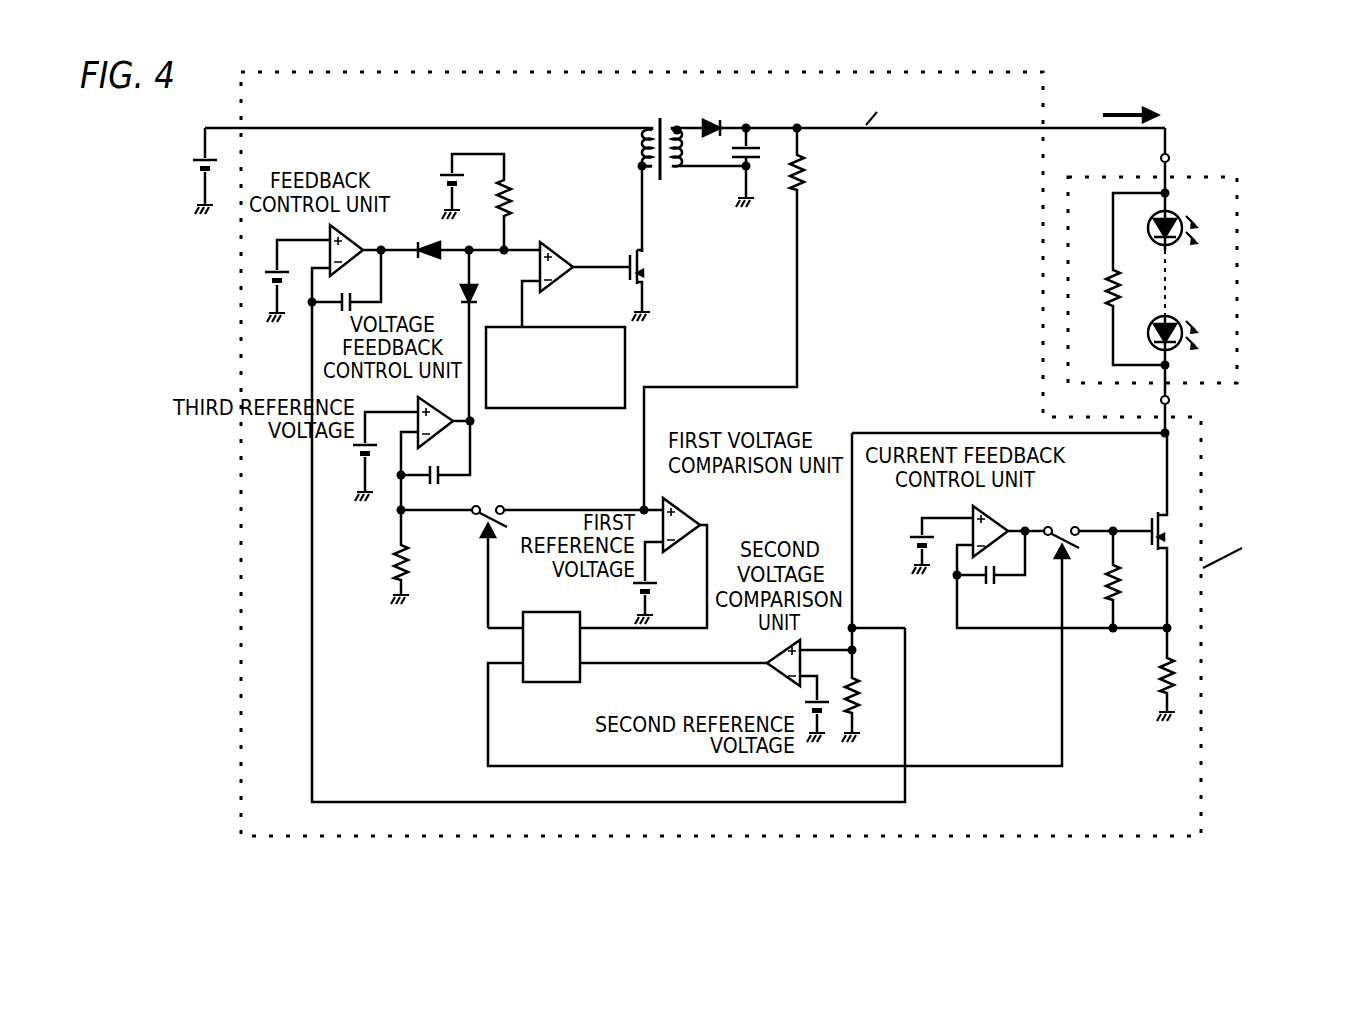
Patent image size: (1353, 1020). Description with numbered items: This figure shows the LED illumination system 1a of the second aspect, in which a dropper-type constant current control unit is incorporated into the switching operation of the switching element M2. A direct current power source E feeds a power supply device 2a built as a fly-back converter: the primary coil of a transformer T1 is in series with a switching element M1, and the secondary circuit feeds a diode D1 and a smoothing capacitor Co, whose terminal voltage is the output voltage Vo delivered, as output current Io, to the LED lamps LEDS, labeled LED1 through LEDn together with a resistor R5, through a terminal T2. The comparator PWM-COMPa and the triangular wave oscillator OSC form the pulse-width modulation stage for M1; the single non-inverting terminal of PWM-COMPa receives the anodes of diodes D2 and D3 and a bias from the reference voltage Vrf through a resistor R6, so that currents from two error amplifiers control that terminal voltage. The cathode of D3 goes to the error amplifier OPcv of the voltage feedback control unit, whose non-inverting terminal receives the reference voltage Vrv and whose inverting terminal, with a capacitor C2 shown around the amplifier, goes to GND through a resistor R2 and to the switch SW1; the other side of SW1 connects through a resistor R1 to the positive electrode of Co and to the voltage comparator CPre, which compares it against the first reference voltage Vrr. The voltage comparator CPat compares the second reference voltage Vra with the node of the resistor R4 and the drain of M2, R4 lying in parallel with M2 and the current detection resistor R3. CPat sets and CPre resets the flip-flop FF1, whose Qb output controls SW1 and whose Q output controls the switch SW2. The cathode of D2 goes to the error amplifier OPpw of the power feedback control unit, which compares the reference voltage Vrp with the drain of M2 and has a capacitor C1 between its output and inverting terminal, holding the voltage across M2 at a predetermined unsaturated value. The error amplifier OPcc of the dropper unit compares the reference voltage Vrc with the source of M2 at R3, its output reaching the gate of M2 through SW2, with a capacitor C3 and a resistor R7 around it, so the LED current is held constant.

The LED illumination system 1a is at (760, 61).
The power supply device 2a is at (1260, 585).
The direct current power source E is at (194, 186).
The transformer T1 is at (921, 171).
The diode D1 is at (717, 113).
The smoothing capacitor Co is at (761, 167).
The resistor R1 is at (742, 319).
The output voltage Vo is at (882, 106).
The output current Io is at (1130, 105).
The LED lamps LEDS is at (1152, 266).
The first LED LED1 is at (1188, 219).
The n-th LED LEDn is at (1189, 329).
The resistor R5 is at (1119, 279).
The second terminal T2 is at (1182, 399).
The error amplifier OPpw is at (374, 246).
The reference voltage Vrp is at (286, 281).
The capacitor C1 is at (346, 280).
The diode D2 is at (476, 237).
The diode D3 is at (453, 335).
The resistor R6 is at (499, 202).
The reference voltage Vrf is at (437, 195).
The comparator PWM-COMPa is at (572, 271).
The triangular wave oscillator OSC is at (555, 353).
The switching element M1 is at (654, 285).
The error amplifier OPcv is at (417, 413).
The reference voltage Vrv is at (370, 456).
The capacitor C2 is at (435, 465).
The resistor R2 is at (417, 557).
The switch SW1 is at (532, 553).
The voltage comparator CPre is at (645, 552).
The first reference voltage Vrr is at (630, 603).
The flip-flop FF1 is at (775, 659).
The voltage comparator CPat is at (790, 665).
The second reference voltage Vra is at (798, 715).
The resistor R4 is at (869, 587).
The error amplifier OPcc is at (1008, 523).
The reference voltage Vrc is at (925, 546).
The capacitor C3 is at (1062, 579).
The switch SW2 is at (1095, 529).
The resistor R7 is at (1130, 579).
The switching element M2 is at (1177, 530).
The current detection resistor R3 is at (1151, 674).